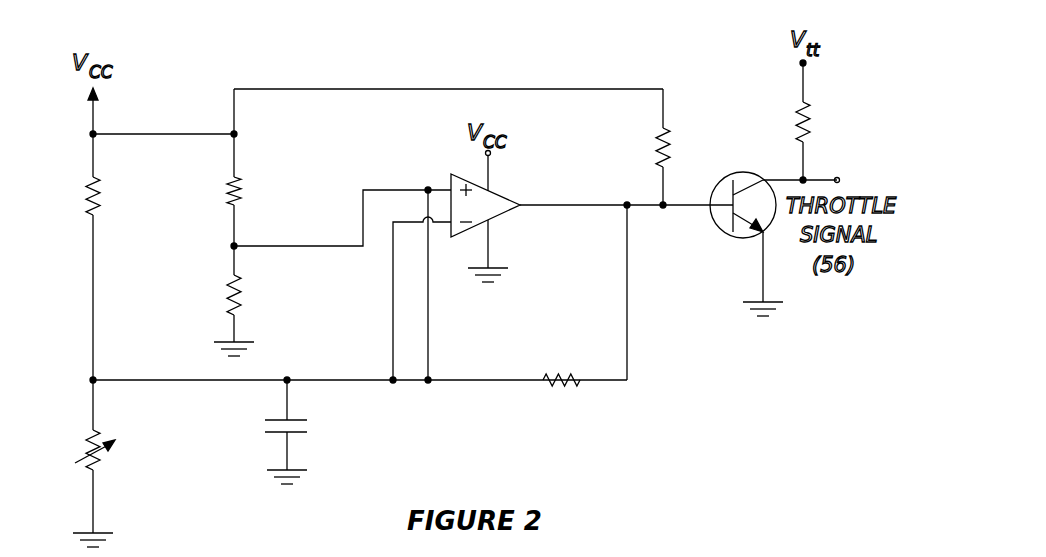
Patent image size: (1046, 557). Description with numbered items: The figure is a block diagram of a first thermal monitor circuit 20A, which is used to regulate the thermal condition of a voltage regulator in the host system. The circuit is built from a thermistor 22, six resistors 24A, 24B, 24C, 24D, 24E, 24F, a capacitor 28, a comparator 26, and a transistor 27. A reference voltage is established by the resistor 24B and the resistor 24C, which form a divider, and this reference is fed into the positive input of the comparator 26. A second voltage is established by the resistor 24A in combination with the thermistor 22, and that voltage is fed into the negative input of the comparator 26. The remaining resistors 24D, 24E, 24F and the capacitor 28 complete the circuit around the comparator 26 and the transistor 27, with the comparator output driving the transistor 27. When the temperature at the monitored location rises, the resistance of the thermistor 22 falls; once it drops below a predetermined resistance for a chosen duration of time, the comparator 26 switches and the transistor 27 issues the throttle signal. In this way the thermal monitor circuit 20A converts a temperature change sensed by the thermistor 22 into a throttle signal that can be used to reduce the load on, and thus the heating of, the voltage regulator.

The first thermal monitor circuit 20A is at (645, 40).
The thermistor 22 is at (113, 450).
The resistor 24A is at (97, 185).
The resistor 24B is at (240, 185).
The resistor 24C is at (243, 300).
The resistor 24D is at (547, 372).
The resistor 24E is at (672, 150).
The resistor 24F is at (810, 128).
The comparator 26 is at (515, 200).
The transistor 27 is at (736, 238).
The capacitor 28 is at (262, 424).